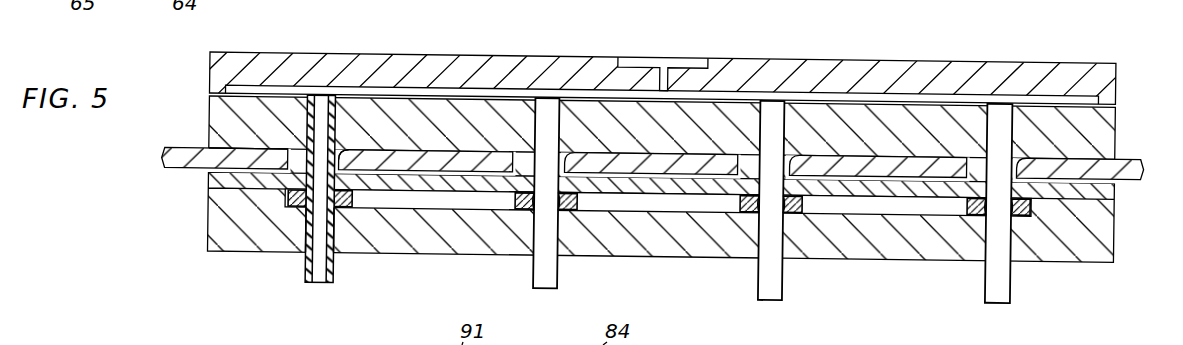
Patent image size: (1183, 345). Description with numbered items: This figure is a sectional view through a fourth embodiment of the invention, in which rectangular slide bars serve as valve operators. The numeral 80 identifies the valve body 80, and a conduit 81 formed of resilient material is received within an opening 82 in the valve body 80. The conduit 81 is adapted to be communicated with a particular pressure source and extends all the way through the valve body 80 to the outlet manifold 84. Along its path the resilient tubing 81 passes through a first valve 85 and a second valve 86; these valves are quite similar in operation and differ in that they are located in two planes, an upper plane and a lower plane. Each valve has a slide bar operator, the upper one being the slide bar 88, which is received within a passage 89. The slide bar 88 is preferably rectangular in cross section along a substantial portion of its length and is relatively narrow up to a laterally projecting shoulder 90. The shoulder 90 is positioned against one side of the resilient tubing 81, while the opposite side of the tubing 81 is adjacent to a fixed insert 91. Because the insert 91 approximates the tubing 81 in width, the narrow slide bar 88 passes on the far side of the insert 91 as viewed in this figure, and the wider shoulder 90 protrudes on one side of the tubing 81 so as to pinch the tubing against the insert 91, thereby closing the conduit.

The valve body 80 is at (207, 235).
The conduit 81 is at (325, 284).
The opening 82 is at (305, 236).
The outlet manifold 84 is at (417, 92).
The first valve 85 is at (360, 199).
The second valve 86 is at (285, 122).
The slide bar operator 88 is at (160, 156).
The passage 89 is at (222, 143).
The laterally projecting shoulder 90 is at (344, 157).
The fixed insert 91 is at (302, 147).